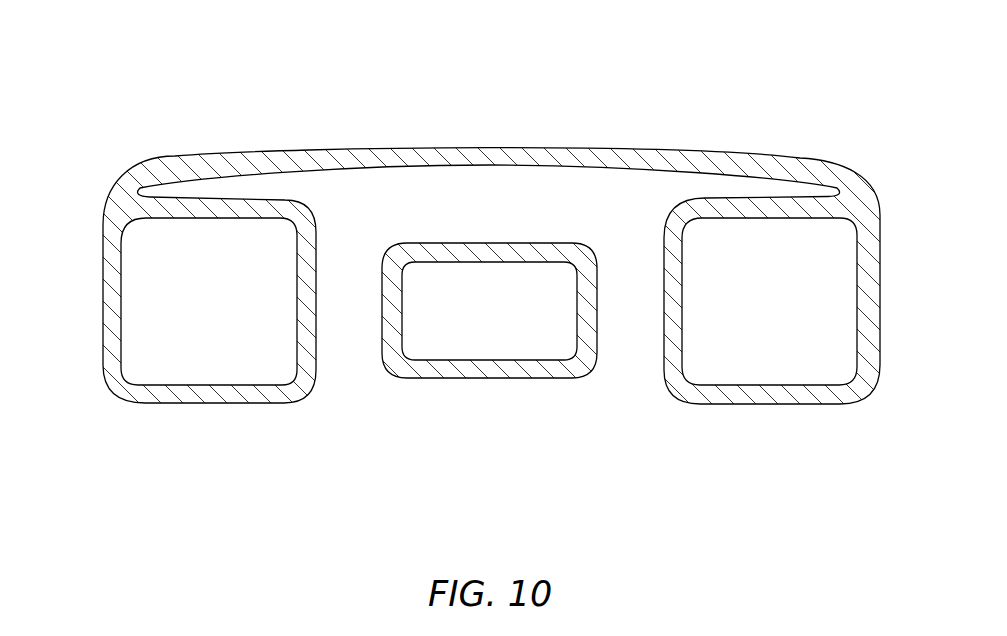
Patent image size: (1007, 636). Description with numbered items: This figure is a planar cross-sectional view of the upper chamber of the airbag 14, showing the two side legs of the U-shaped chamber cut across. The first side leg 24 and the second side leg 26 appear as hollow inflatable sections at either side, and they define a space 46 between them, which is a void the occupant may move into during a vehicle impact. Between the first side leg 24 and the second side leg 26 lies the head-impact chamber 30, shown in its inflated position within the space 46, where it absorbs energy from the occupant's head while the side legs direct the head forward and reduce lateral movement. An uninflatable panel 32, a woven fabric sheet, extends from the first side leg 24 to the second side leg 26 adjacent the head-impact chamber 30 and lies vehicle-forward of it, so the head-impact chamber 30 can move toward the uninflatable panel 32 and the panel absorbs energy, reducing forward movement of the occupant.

The airbag 14 is at (487, 261).
The first side leg 24 is at (168, 311).
The second side leg 26 is at (808, 311).
The head-impact chamber 30 is at (523, 335).
The uninflatable panel 32 is at (670, 147).
The space 46 is at (627, 380).